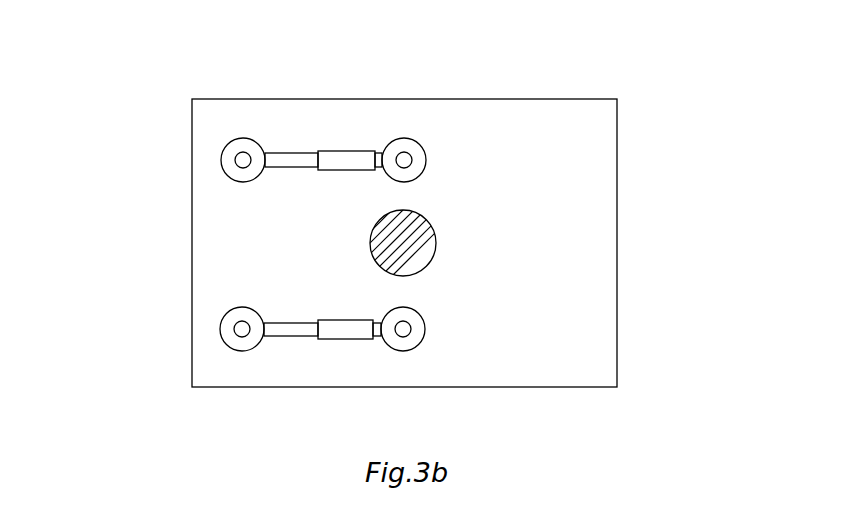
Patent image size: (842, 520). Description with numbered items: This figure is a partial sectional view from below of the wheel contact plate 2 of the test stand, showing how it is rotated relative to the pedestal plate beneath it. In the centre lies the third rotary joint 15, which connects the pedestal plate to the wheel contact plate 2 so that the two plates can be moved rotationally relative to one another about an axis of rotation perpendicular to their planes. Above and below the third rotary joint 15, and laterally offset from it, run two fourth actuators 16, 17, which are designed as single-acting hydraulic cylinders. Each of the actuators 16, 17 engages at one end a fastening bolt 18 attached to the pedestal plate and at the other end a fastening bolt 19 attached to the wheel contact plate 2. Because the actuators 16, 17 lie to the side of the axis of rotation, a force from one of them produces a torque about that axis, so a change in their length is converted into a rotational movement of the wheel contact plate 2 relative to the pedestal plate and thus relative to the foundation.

The wheel contact plate 2 is at (422, 113).
The third rotary joint 15 is at (410, 245).
The fourth actuator 16 is at (357, 328).
The fourth actuator 17 is at (345, 162).
The fastening bolt 18 is at (410, 158).
The fastening bolt 19 is at (243, 160).